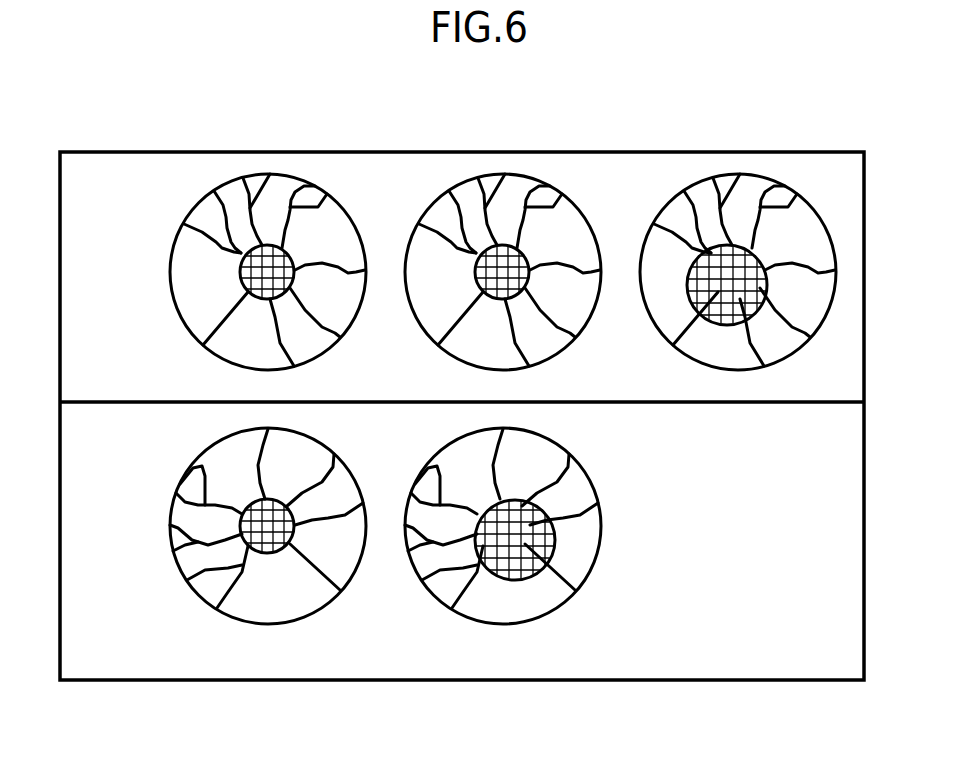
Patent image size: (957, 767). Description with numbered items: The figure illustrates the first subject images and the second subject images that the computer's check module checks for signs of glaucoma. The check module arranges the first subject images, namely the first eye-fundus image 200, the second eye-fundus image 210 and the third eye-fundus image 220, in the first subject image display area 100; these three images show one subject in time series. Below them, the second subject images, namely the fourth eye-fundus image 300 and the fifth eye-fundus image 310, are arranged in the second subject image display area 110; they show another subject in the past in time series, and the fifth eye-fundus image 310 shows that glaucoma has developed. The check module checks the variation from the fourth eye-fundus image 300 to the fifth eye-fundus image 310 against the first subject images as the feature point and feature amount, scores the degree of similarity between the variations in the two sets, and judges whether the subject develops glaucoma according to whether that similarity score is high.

The first subject image display area 100 is at (808, 168).
The second subject image display area 110 is at (808, 668).
The first eye-fundus image 200 is at (273, 193).
The second eye-fundus image 210 is at (510, 193).
The third eye-fundus image 220 is at (747, 202).
The fourth eye-fundus image 300 is at (267, 610).
The fifth eye-fundus image 310 is at (518, 610).